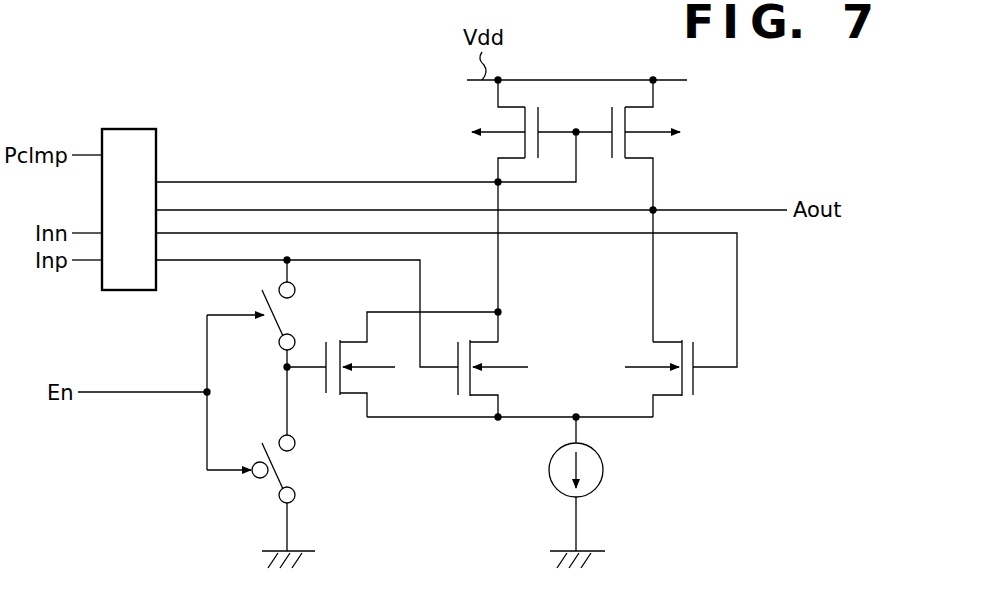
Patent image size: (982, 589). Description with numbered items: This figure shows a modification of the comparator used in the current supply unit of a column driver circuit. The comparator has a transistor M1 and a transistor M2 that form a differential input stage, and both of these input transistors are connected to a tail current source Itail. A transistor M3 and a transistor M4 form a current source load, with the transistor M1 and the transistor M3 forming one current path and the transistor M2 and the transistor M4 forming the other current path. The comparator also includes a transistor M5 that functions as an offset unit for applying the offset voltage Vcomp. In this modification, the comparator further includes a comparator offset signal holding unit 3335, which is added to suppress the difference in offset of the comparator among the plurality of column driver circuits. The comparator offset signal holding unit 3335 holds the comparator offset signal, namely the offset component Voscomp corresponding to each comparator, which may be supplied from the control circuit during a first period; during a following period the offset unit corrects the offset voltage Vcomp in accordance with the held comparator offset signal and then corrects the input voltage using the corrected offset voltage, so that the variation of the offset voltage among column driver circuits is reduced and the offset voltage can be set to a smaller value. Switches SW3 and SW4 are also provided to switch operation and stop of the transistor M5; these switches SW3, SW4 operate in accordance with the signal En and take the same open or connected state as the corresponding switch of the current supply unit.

The comparator offset signal holding unit 3335 is at (133, 129).
The transistor M1 is at (498, 377).
The transistor M2 is at (652, 377).
The transistor M3 is at (534, 131).
The transistor M4 is at (653, 211).
The transistor M5 is at (392, 364).
The switch SW3 is at (300, 347).
The switch SW4 is at (295, 501).
The tail current source Itail is at (562, 492).